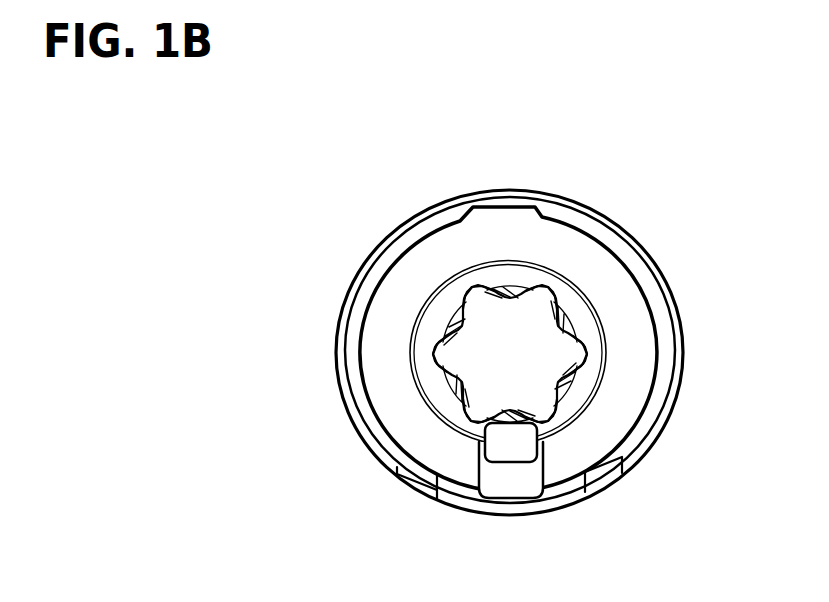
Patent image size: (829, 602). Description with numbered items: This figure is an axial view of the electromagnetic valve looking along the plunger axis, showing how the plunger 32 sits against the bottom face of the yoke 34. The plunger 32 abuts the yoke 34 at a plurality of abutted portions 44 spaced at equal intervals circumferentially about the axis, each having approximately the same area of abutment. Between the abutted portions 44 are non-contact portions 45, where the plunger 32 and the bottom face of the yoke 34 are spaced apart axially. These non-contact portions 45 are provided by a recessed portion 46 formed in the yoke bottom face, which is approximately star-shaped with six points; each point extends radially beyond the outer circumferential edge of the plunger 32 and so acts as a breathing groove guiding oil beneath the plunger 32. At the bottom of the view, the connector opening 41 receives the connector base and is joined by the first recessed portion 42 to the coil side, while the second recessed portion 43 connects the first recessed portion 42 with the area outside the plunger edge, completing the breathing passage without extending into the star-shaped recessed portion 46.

The plunger 32 is at (600, 352).
The yoke 34 is at (647, 253).
The connector opening 41 is at (483, 505).
The first recessed portion 42 is at (508, 488).
The second recessed portion 43 is at (520, 453).
The abutted portions 44 is at (510, 290).
The non-contact portions 45 is at (472, 293).
The recessed portion 46 is at (494, 368).